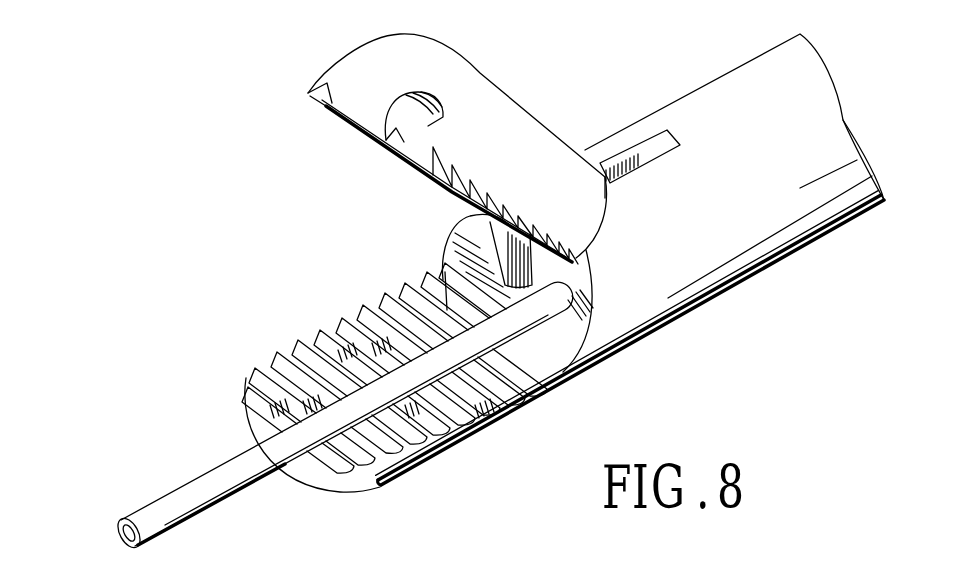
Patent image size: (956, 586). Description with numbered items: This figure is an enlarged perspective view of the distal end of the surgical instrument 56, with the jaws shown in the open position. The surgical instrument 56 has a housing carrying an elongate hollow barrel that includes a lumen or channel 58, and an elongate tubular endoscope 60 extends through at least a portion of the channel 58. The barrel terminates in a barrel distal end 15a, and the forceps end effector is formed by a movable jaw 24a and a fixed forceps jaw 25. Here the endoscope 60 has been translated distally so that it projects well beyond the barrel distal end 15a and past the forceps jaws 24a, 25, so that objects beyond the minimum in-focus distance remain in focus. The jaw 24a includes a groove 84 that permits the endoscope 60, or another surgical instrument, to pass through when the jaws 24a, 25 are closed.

The forceps jaw 24a is at (347, 52).
The groove 84 is at (436, 97).
The surgical instrument 56 is at (713, 120).
The barrel distal end 15a is at (460, 253).
The barrel channel 58 is at (589, 316).
The elongate tubular endoscope 60 is at (222, 479).
The fixed forceps jaw 25 is at (379, 487).